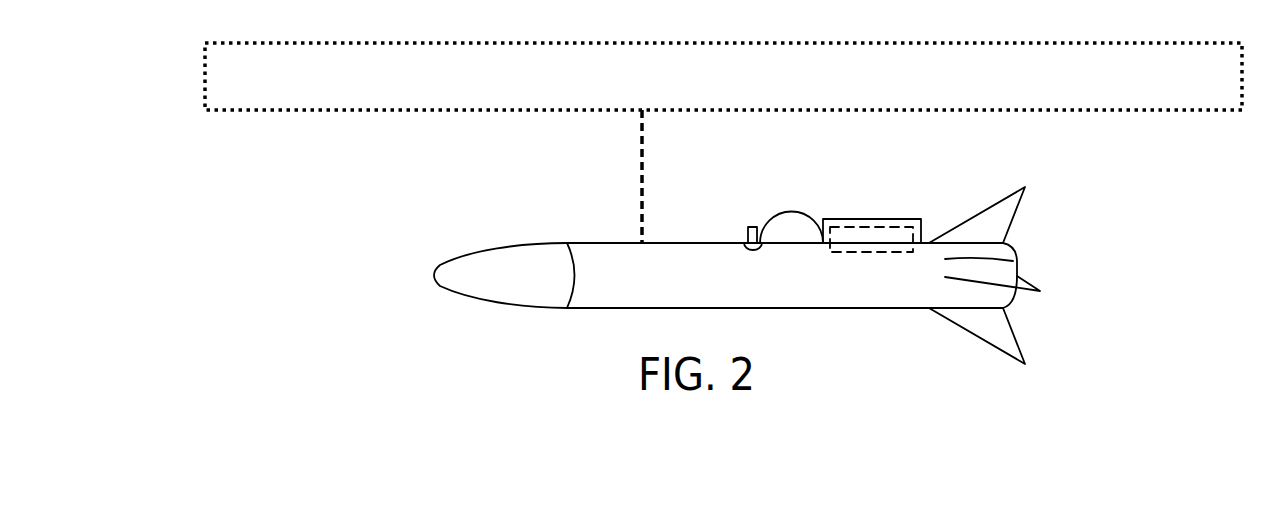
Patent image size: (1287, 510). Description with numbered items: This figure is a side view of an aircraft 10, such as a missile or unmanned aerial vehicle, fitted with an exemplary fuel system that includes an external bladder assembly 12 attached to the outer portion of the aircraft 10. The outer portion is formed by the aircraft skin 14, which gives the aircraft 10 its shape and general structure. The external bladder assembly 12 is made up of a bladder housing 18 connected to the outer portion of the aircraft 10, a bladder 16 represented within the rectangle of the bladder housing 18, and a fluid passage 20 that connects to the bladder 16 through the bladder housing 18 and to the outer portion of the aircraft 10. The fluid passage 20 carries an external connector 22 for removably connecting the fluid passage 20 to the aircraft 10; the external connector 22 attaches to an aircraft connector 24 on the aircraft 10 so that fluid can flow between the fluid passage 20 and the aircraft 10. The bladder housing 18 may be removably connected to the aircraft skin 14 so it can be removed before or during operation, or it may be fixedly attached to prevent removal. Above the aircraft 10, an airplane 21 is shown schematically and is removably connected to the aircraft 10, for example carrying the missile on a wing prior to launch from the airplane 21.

The aircraft 10 is at (1034, 312).
The external bladder assembly 12 is at (768, 192).
The aircraft skin 14 is at (1013, 261).
The bladder 16 is at (851, 227).
The bladder housing 18 is at (918, 218).
The fluid passage 20 is at (793, 210).
The airplane 21 is at (510, 112).
The external connector 22 is at (751, 226).
The aircraft connector 24 is at (748, 242).